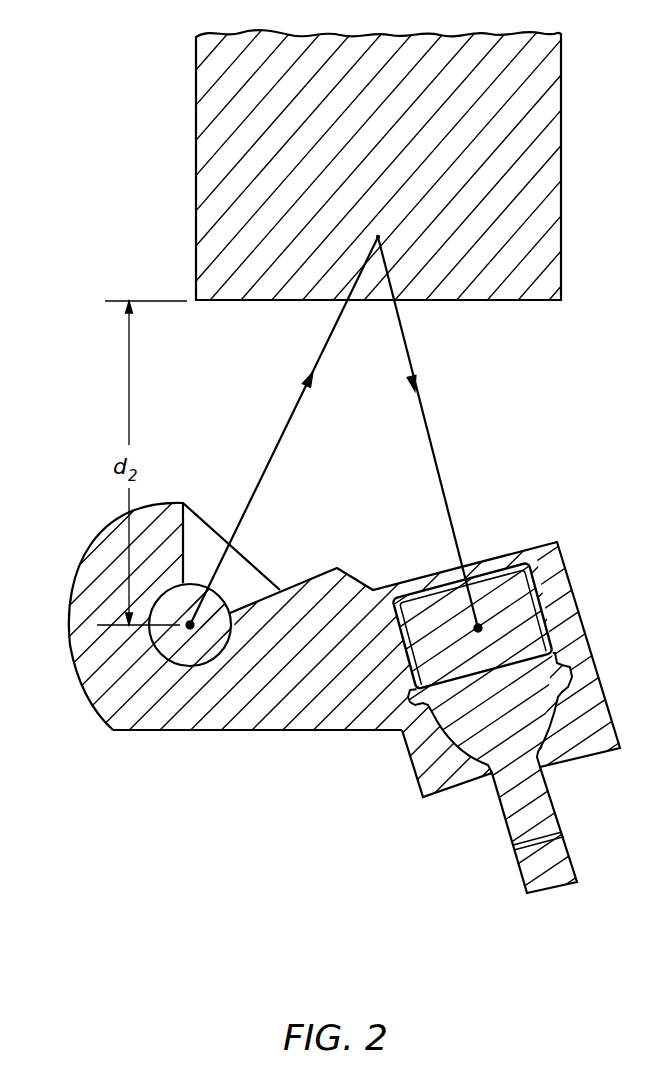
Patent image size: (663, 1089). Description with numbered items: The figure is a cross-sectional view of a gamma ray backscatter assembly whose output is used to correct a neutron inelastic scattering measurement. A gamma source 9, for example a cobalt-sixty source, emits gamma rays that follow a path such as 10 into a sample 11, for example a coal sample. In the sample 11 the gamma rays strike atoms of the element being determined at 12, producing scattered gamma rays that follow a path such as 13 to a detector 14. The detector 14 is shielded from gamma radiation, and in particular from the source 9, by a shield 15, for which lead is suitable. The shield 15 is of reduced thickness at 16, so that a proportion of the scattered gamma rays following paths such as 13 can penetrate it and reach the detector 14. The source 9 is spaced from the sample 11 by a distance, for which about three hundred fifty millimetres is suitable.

The γ source 9 is at (190, 650).
The path of emitted γ rays 10 is at (278, 430).
The sample 11 is at (540, 190).
The scattering point 12 is at (390, 232).
The path of scattered γ rays 13 is at (437, 429).
The detector 14 is at (526, 624).
The shield 15 is at (116, 698).
The reduced thickness region of shield 16 is at (482, 552).